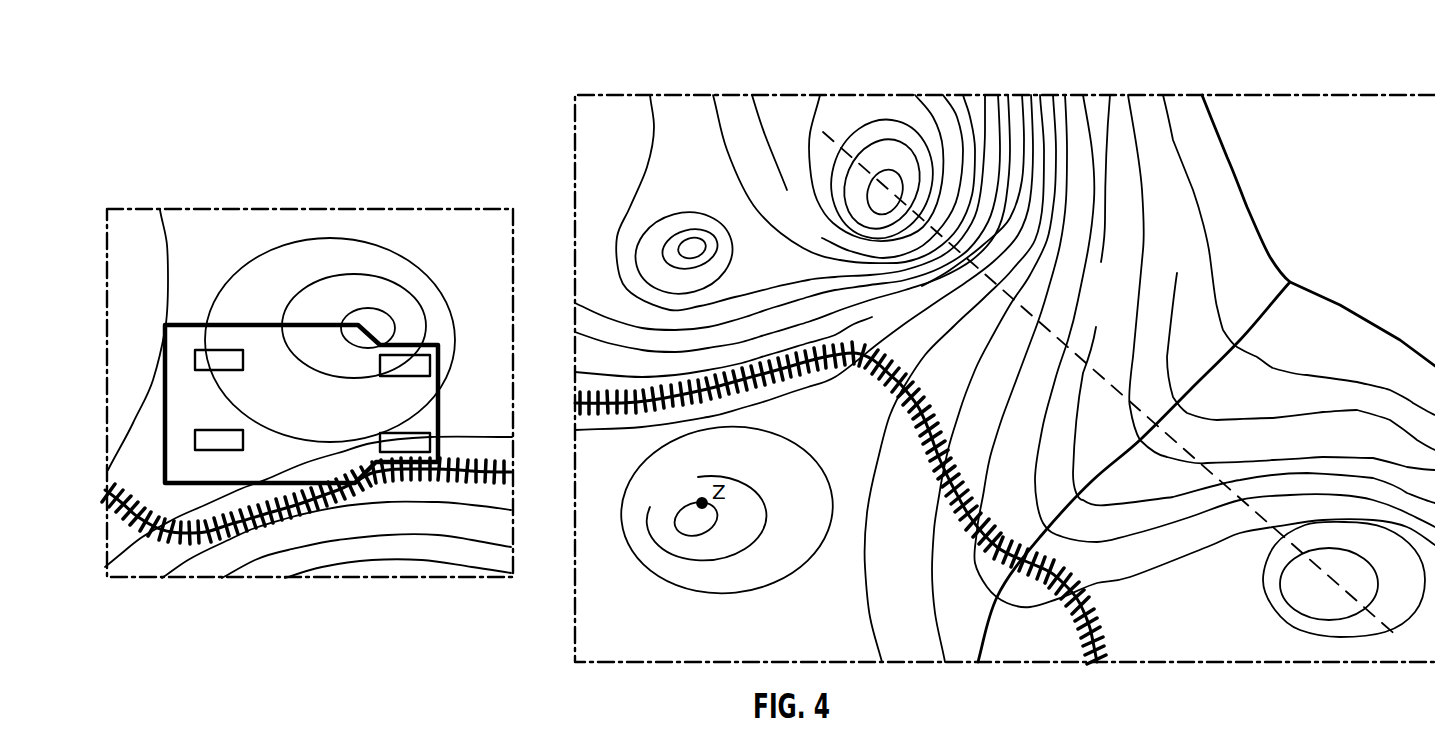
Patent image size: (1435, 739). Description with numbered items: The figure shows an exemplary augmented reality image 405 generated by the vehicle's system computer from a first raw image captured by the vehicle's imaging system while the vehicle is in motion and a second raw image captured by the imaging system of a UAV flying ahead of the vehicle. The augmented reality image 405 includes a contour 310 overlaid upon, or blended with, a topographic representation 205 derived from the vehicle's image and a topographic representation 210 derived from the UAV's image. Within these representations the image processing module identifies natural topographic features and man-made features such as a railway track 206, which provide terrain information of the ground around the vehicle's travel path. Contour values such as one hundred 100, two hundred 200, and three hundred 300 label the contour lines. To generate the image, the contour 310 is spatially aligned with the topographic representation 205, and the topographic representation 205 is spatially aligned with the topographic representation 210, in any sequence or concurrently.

The topographic representation 205 is at (390, 208).
The contour 310 is at (432, 331).
The augmented reality image 405 is at (1144, 52).
The railway track 206 is at (488, 499).
The topographic representation 210 is at (852, 93).
The contour line 100 is at (1254, 300).
The contour line 200 is at (799, 327).
The contour line 300 is at (857, 176).